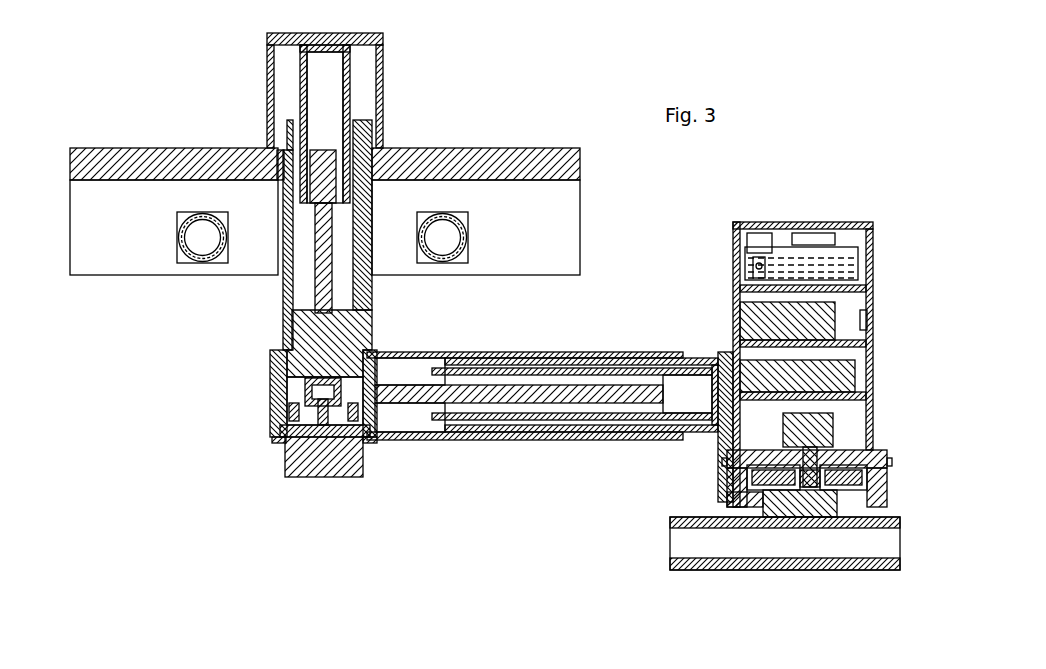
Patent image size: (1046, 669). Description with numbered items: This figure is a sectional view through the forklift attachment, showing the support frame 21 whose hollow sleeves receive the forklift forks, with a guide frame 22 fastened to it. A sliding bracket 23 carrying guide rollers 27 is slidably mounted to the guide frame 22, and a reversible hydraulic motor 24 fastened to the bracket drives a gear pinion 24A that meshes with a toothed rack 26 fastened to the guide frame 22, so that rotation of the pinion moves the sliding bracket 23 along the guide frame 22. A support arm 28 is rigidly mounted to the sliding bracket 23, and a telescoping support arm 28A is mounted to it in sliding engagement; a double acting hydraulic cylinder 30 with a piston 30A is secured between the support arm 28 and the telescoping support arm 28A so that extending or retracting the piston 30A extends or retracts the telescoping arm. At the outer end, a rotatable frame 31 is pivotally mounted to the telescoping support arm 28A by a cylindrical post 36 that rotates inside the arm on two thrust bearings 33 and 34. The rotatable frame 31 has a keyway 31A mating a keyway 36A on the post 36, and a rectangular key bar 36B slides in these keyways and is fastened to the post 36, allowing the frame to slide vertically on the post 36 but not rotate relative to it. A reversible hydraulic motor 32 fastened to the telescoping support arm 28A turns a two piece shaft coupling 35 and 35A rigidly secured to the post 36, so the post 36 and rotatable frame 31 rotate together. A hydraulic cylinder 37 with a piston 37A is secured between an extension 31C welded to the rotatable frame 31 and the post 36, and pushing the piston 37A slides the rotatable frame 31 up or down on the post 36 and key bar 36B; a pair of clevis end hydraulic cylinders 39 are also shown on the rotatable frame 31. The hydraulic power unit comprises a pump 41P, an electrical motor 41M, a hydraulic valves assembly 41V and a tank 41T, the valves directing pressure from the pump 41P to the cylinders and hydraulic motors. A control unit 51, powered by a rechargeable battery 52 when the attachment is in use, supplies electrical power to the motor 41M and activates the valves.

The support frame 21 is at (860, 560).
The guide frame 22 is at (775, 510).
The sliding bracket 23 is at (730, 497).
The reversible hydraulic motor 24 is at (825, 430).
The gear pinion 24A is at (812, 490).
The toothed rack 26 is at (830, 478).
The guide rollers 27 is at (745, 458).
The support arm 28 is at (606, 440).
The telescoping support arm 28A is at (548, 432).
The double acting hydraulic cylinder 30 is at (472, 422).
The piston 30A is at (405, 395).
The rotatable frame 31 is at (160, 150).
The keyway 31A is at (282, 160).
The extension 31C is at (268, 40).
The reversible hydraulic motor 32 is at (296, 478).
The thrust bearing 33 is at (287, 442).
The thrust bearing 34 is at (282, 412).
The shaft coupling 35 is at (307, 398).
The shaft coupling 35A is at (282, 368).
The cylindrical post 36 is at (350, 345).
The keyway 36A is at (287, 125).
The rectangular key bar 36B is at (288, 312).
The hydraulic cylinder 37 is at (350, 95).
The piston 37A is at (325, 255).
The clevis end hydraulic cylinders 39 is at (200, 262).
The electrical motor 41M is at (760, 238).
The pump 41P is at (755, 268).
The tank 41T is at (850, 250).
The hydraulic valves assembly 41V is at (805, 240).
The control unit 51 is at (838, 318).
The rechargeable battery 52 is at (845, 378).